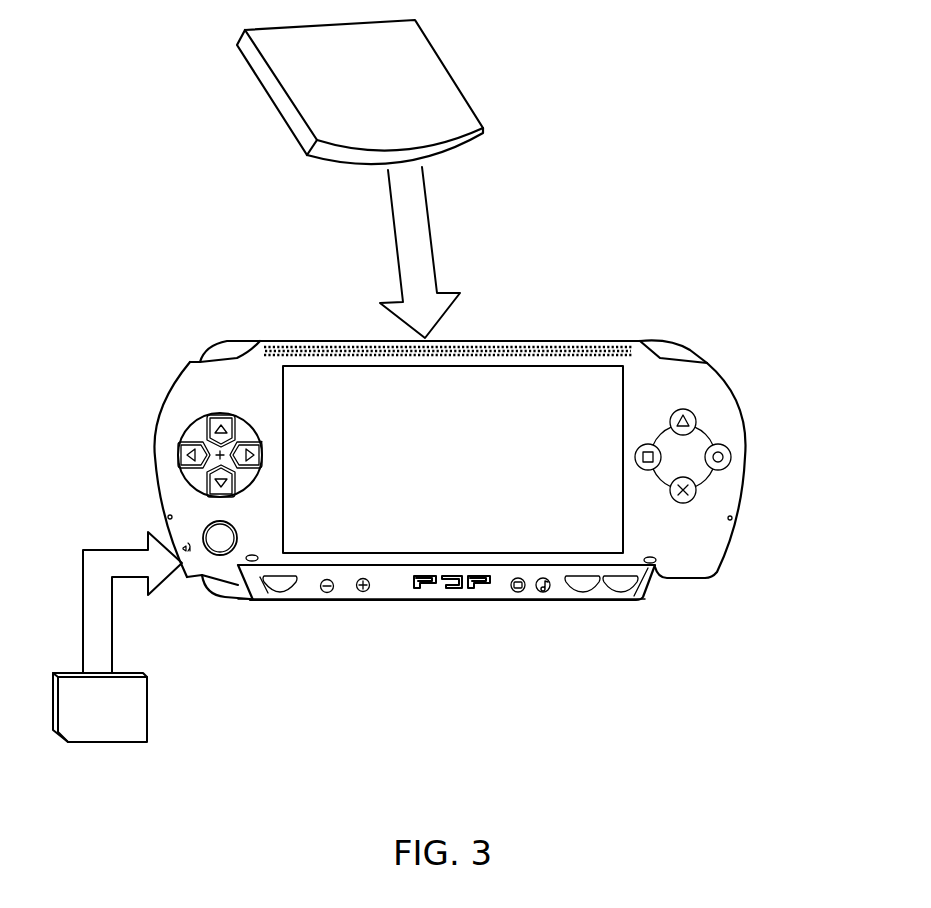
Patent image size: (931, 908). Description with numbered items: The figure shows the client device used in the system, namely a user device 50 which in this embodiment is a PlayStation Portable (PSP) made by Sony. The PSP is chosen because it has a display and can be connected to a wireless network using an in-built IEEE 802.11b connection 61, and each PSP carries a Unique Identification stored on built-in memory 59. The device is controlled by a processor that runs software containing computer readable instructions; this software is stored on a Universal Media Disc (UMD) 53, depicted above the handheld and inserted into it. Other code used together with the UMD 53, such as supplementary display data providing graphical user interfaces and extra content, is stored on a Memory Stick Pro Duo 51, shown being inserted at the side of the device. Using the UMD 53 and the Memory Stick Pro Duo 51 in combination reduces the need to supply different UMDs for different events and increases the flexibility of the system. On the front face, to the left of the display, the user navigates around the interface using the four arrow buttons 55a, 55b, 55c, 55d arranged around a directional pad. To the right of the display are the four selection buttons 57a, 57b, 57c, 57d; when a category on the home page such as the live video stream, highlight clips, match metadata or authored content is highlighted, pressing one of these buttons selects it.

The user device 50 is at (593, 340).
The Memory Stick Pro Duo 51 is at (97, 745).
The Universal Media Disc (UMD) 53 is at (441, 58).
The arrow button 55a is at (193, 422).
The arrow button 55b is at (257, 482).
The arrow button 55c is at (207, 482).
The arrow button 55d is at (180, 455).
The selection button 57a is at (683, 407).
The selection button 57b is at (732, 457).
The selection button 57c is at (695, 493).
The selection button 57d is at (635, 457).
The built-in memory 59 is at (663, 537).
The IEEE 802.11b connection 61 is at (663, 370).